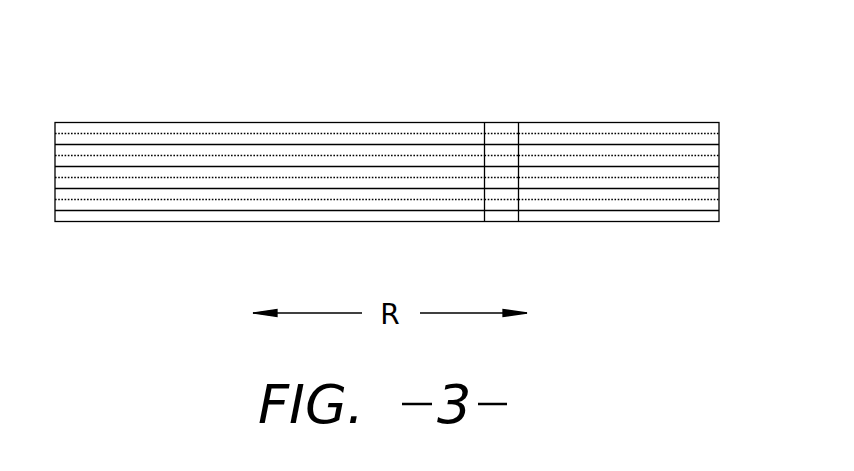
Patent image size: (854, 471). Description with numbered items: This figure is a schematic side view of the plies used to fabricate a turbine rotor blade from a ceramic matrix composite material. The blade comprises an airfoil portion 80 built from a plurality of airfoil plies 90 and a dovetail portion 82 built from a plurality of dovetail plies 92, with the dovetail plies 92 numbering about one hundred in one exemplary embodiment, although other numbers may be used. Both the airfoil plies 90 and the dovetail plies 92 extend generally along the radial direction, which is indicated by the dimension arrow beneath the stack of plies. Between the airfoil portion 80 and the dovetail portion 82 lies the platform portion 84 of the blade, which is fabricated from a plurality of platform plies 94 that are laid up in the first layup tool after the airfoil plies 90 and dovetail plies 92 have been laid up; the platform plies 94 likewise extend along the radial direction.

The airfoil portion 80 is at (182, 95).
The dovetail portion 82 is at (594, 95).
The platform portion 84 is at (500, 233).
The airfoil plies 90 is at (257, 127).
The dovetail plies 92 is at (632, 155).
The platform plies 94 is at (502, 152).